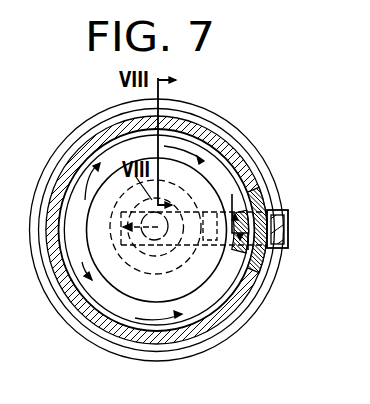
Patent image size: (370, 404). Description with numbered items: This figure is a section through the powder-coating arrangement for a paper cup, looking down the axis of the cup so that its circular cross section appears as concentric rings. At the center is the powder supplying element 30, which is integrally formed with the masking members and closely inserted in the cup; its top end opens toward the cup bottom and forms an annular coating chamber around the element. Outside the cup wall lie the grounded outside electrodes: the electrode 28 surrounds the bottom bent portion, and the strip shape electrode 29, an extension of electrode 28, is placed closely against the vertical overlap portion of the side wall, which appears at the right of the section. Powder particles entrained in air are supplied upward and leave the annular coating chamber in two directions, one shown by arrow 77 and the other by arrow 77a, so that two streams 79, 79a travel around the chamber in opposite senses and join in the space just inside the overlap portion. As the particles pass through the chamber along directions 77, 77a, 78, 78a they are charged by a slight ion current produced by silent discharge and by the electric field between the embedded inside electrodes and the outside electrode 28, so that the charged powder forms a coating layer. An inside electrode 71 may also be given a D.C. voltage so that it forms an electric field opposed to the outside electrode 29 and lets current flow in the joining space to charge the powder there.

The outside electrode 28 is at (57, 259).
The strip shape electrode 29 is at (287, 210).
The powder supplying element 30 is at (170, 258).
The inside electrode 71 is at (212, 212).
The arrow (powder flow direction) 77 is at (92, 180).
The arrow (powder flow direction) 77a is at (92, 278).
The flow direction 78 is at (199, 140).
The flow direction 78a is at (198, 304).
The powder stream 79 is at (252, 200).
The powder stream 79a is at (238, 255).